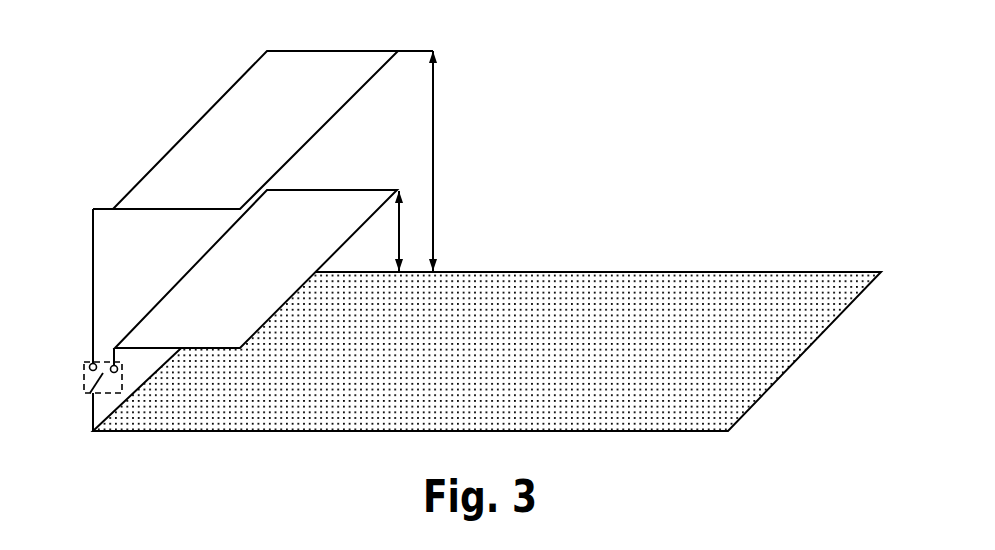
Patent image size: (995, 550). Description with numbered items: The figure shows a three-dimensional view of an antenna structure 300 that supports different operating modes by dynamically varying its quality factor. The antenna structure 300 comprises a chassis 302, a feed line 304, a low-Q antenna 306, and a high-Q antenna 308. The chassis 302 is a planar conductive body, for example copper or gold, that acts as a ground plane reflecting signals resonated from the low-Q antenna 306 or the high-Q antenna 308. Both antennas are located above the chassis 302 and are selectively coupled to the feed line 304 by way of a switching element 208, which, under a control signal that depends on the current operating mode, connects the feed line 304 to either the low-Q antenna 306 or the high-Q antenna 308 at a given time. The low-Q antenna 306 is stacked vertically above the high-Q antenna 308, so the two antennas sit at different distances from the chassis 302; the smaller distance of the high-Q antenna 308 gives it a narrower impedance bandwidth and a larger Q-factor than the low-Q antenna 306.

The antenna structure 300 is at (98, 43).
The chassis 302 is at (843, 272).
The feed line 304 is at (93, 420).
The low-Q antenna 306 is at (325, 189).
The high-Q antenna 308 is at (325, 50).
The switching element 208 is at (88, 362).